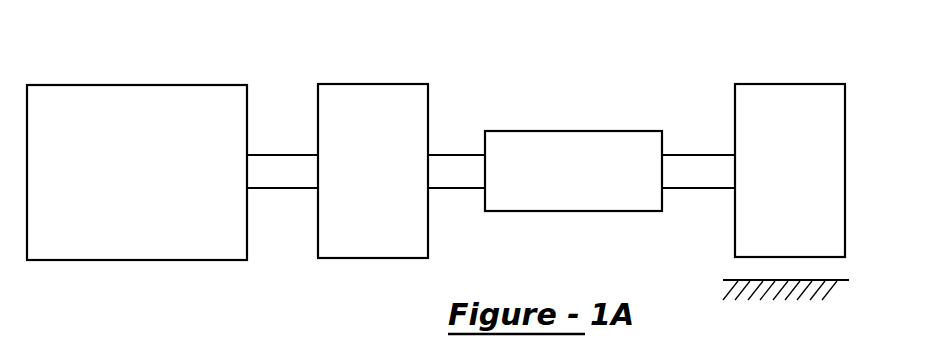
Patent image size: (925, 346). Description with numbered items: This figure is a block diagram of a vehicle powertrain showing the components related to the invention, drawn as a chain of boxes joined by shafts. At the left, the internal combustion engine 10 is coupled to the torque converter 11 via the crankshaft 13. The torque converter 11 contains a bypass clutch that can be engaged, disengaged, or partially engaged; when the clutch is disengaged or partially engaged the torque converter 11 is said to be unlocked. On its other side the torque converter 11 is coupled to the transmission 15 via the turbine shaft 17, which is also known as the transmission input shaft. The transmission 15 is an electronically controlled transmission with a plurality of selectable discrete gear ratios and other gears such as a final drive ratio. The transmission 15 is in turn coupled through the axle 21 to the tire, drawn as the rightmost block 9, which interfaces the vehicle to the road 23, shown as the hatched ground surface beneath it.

The load 9 is at (788, 84).
The internal combustion engine 10 is at (135, 260).
The torque converter 11 is at (372, 84).
The crankshaft 13 is at (282, 189).
The transmission 15 is at (571, 131).
The turbine shaft 17 is at (455, 154).
The axle 21 is at (699, 155).
The road 23 is at (738, 280).